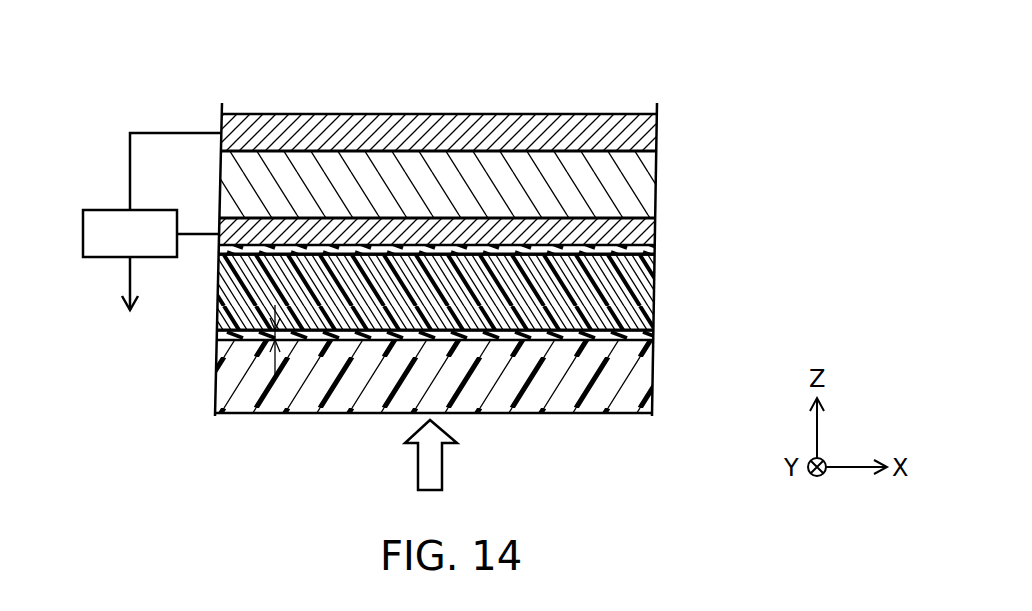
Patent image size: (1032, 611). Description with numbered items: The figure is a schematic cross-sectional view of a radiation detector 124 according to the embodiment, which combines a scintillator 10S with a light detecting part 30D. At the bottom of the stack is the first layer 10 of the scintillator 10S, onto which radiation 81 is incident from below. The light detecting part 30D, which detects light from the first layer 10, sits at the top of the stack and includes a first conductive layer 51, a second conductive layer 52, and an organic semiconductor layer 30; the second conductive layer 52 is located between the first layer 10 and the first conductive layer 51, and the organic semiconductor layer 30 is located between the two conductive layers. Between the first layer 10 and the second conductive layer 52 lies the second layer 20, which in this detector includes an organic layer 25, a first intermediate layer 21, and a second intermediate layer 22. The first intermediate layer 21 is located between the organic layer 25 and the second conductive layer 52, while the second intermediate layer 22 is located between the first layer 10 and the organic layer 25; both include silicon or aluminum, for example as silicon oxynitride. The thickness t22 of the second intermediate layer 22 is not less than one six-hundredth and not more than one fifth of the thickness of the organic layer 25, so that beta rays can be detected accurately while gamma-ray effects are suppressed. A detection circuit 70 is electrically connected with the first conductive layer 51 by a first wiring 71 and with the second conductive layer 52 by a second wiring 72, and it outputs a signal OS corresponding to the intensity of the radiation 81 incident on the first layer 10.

The radiation detector 124 is at (801, 108).
The first conductive layer 51 is at (634, 131).
The organic semiconductor layer 30 is at (632, 185).
The second conductive layer 52 is at (633, 233).
The light detecting part 30D is at (765, 90).
The first intermediate layer 21 is at (637, 248).
The organic layer 25 is at (637, 288).
The second intermediate layer 22 is at (637, 335).
The second layer 20 is at (705, 237).
The first layer 10 is at (632, 375).
The scintillator 10S is at (663, 397).
The thickness of the second intermediate layer t22 is at (275, 337).
The radiation 81 is at (418, 462).
The detection circuit 70 is at (108, 210).
The first wiring 71 is at (128, 150).
The second wiring 72 is at (195, 236).
The signal OS is at (128, 280).